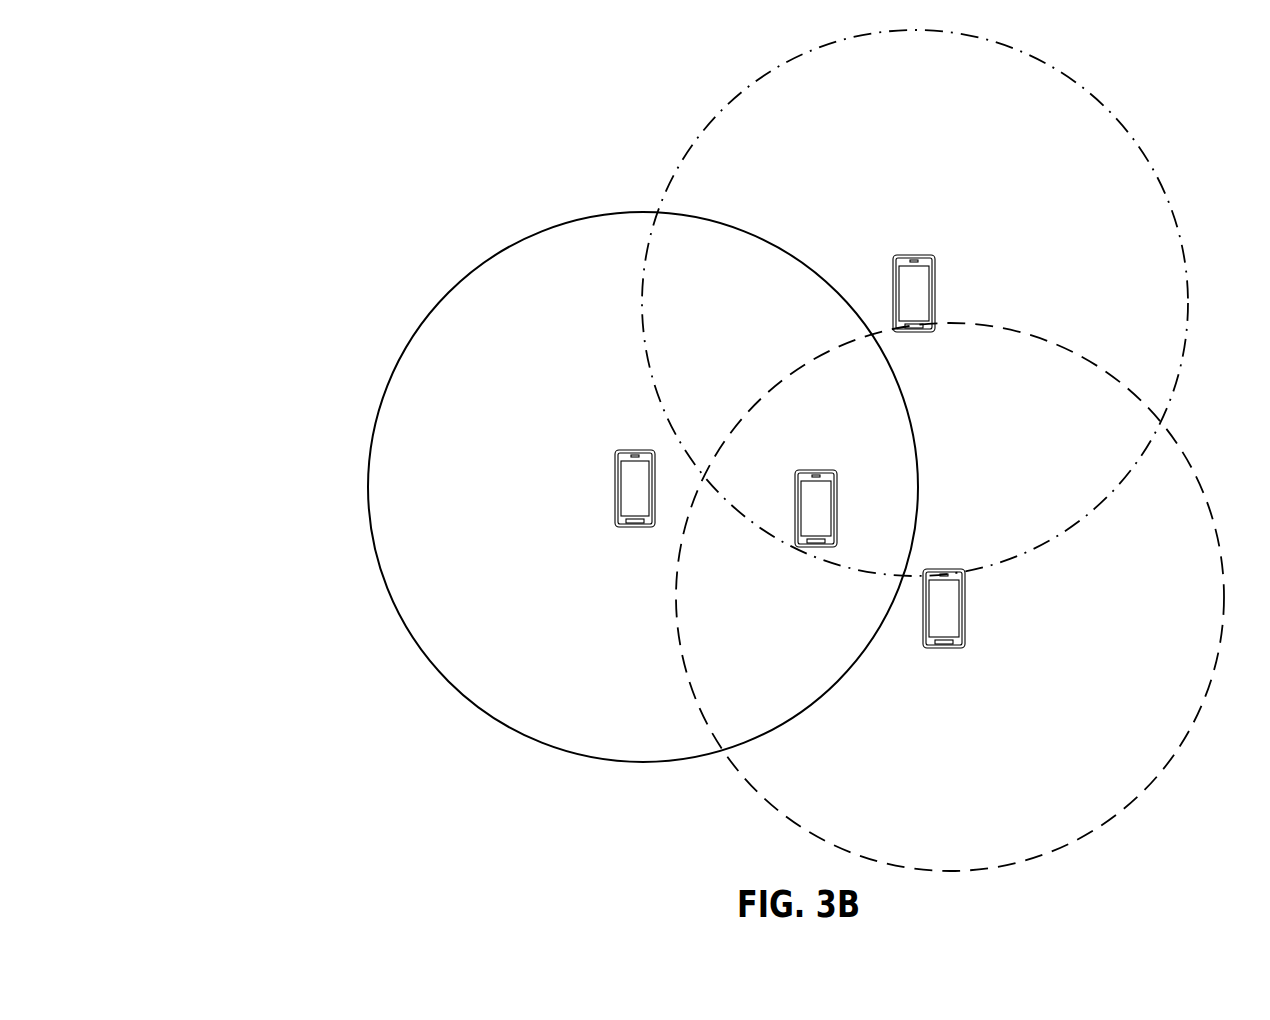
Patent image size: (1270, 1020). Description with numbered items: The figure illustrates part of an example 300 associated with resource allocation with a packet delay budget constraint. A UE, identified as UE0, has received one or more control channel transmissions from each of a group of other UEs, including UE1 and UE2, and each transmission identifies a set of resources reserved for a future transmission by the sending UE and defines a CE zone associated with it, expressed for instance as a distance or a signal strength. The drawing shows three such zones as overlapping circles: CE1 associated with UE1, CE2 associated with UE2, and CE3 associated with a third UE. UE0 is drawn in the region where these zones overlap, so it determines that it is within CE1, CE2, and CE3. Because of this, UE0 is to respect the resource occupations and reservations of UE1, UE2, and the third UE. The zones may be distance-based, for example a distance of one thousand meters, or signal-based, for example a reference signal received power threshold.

The example 300 is at (285, 67).
The CE zone associated with UE1 CE1 is at (643, 487).
The CE zone associated with UE2 CE2 is at (915, 303).
The CE zone associated with UE3 CE3 is at (950, 597).
The UE UE0 is at (817, 498).
The element UE1 is at (605, 488).
The element UE2 is at (956, 451).